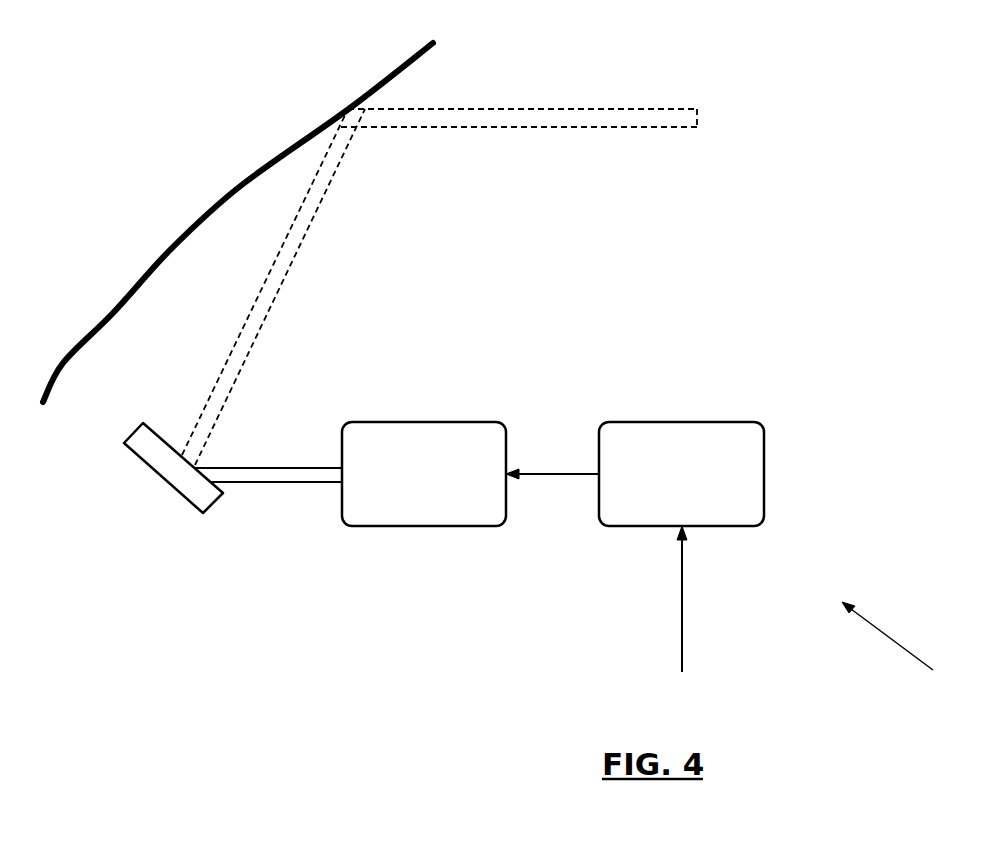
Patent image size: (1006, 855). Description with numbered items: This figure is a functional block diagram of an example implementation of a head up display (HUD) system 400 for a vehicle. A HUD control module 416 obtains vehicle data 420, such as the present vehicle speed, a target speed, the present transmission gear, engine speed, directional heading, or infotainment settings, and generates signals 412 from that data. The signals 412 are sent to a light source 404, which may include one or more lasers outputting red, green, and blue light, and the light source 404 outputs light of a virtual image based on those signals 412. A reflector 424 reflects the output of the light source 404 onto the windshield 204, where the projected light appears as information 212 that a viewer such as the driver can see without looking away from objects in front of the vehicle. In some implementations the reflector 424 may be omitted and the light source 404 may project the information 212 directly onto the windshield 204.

The windshield 204 is at (243, 185).
The information 212 is at (518, 127).
The head up display system 400 is at (908, 643).
The light source 404 is at (474, 420).
The signals 412 is at (527, 470).
The HUD control module 416 is at (732, 420).
The vehicle data 420 is at (682, 583).
The reflector 424 is at (185, 480).